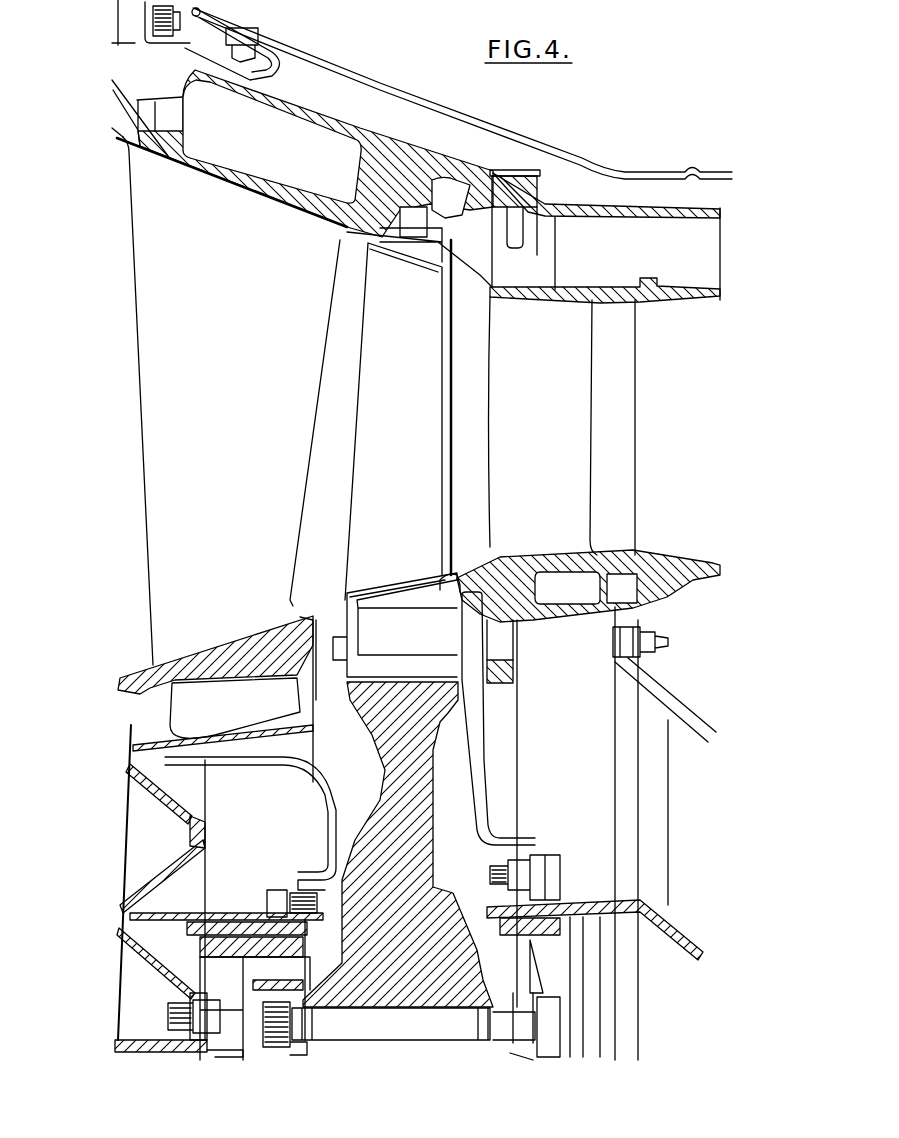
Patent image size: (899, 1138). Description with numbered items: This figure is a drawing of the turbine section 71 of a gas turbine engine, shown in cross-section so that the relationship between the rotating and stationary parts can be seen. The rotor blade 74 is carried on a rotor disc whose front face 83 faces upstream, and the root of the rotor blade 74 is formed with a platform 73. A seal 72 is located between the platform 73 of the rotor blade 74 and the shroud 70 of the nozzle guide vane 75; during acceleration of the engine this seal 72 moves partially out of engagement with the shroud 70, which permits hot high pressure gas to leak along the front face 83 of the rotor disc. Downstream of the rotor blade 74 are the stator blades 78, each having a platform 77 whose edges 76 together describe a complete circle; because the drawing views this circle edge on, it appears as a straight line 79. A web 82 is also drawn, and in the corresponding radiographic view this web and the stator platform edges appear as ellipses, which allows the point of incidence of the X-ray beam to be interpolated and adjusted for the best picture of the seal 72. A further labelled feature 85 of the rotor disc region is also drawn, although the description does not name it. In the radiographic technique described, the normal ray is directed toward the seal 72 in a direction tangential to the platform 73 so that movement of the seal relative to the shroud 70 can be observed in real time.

The shroud 70 is at (508, 563).
The turbine section 71 is at (490, 120).
The seal 72 is at (457, 573).
The platform 73 is at (433, 577).
The rotor blade 74 is at (368, 403).
The nozzle guide vane 75 is at (592, 453).
The edges 76 is at (317, 607).
The platforms 77 is at (207, 650).
The stator blades 78 is at (146, 471).
The straight line 79 is at (273, 677).
The web 82 is at (657, 700).
The front face 83 is at (403, 776).
The disk hub 85 is at (416, 836).